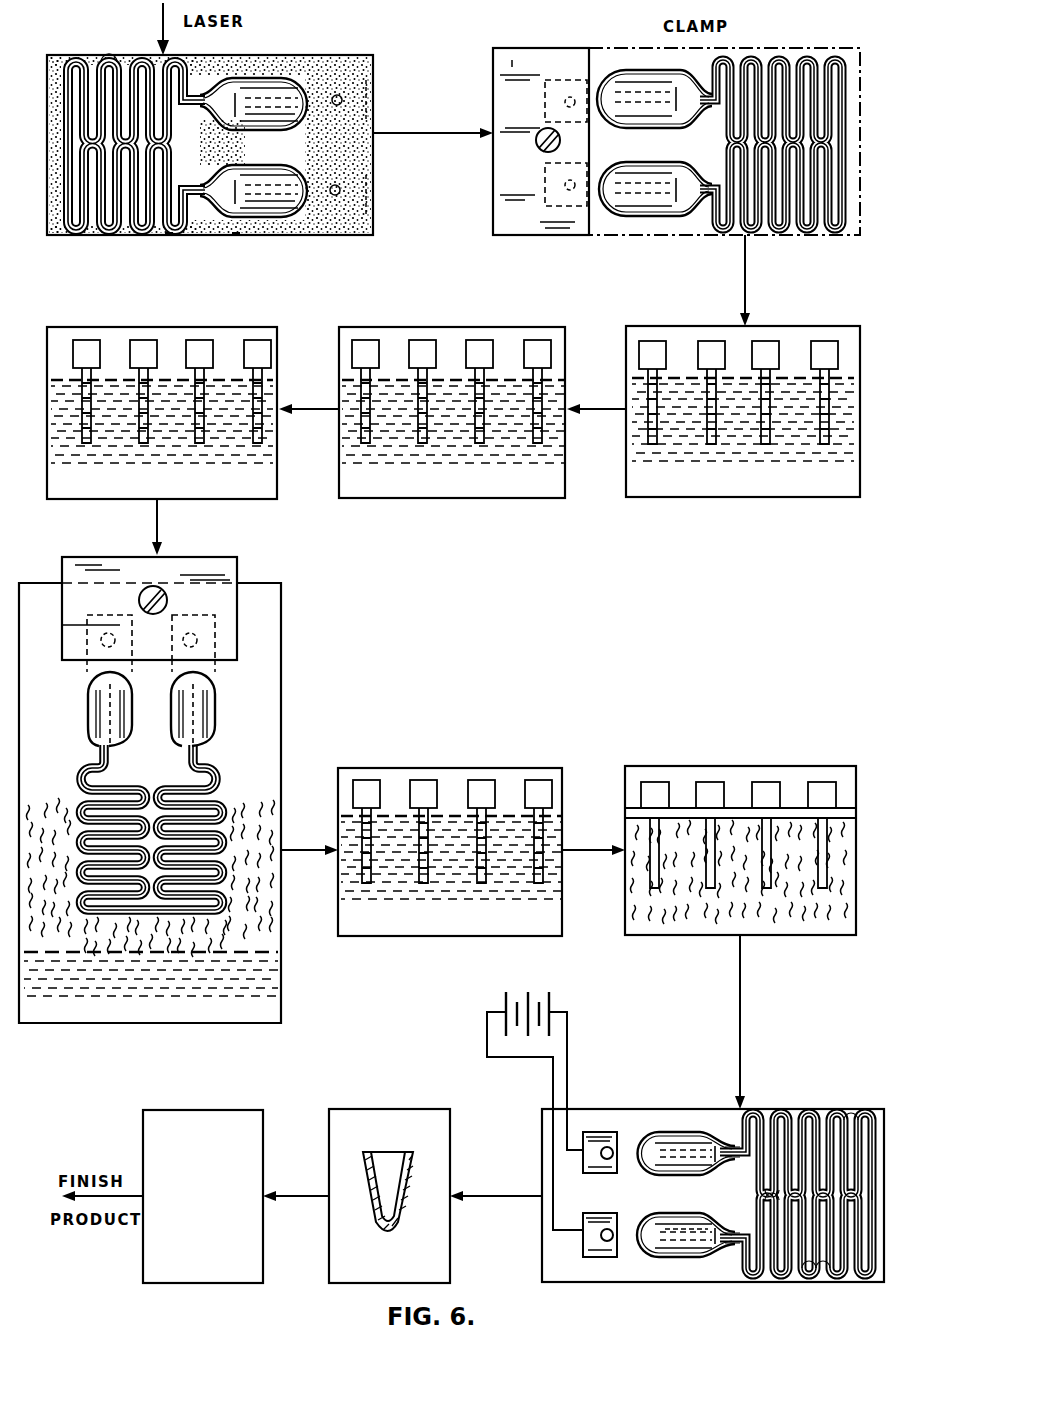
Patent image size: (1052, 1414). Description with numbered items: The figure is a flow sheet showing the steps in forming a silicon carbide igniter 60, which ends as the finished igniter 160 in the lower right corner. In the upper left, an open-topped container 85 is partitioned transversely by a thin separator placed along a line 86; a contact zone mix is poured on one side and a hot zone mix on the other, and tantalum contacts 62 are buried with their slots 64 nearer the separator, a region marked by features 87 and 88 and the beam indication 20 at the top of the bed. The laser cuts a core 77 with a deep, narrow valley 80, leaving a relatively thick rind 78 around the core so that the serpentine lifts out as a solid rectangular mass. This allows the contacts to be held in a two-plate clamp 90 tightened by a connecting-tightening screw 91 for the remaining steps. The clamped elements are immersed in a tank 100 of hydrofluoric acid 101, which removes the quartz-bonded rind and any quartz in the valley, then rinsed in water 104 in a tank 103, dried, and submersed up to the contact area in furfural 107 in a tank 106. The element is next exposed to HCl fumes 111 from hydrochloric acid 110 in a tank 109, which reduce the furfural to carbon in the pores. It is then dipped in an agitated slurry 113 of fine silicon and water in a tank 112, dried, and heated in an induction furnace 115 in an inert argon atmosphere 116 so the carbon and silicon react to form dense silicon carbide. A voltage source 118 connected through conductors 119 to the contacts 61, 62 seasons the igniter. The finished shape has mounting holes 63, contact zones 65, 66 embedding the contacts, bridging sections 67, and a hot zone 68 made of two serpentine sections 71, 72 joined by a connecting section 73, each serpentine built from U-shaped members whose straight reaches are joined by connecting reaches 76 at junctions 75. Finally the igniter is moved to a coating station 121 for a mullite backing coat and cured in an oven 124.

The laser-cut envelope opening 20 is at (255, 60).
The igniter 60 is at (90, 68).
The contact 61 is at (370, 92).
The contact 62 is at (372, 203).
The mounting hole 63 is at (603, 1158).
The slot 64 is at (655, 1250).
The contact zone 65 is at (686, 1135).
The contact zone 66 is at (700, 1252).
The bridging section 67 is at (738, 1135).
The hot zone 68 is at (818, 1275).
The serpentine section 71 is at (846, 1125).
The serpentine section 72 is at (812, 1268).
The connecting section 73 is at (872, 1200).
The upper row junction 75 is at (765, 1190).
The connecting reaches 76 is at (764, 1197).
The core 77 is at (882, 1122).
The rind 78 is at (108, 74).
The valley 80 is at (800, 222).
The open-topped container 85 is at (318, 56).
The line of partition 86 is at (228, 228).
The cut line 87 is at (237, 233).
The cut line 88 is at (172, 233).
The two-plate clamp 90 is at (518, 48).
The connecting-tightening screw 91 is at (538, 143).
The tank 100 is at (750, 497).
The hydrofluoric acid 101 is at (853, 428).
The tank 103 is at (452, 498).
The water 104 is at (557, 443).
The tank 106 is at (213, 499).
The furfural 107 is at (253, 452).
The tank 109 is at (283, 1022).
The hydrochloric acid 110 is at (245, 980).
The HCl fumes 111 is at (250, 903).
The tank 112 is at (563, 930).
The slurry 113 is at (548, 917).
The induction furnace 115 is at (855, 930).
The inert atmosphere 116 is at (830, 903).
The voltage source 118 is at (548, 1002).
The conductors 119 is at (553, 1076).
The coating station 121 is at (432, 1178).
The oven 124 is at (233, 1267).
The finished igniter 160 is at (782, 1118).